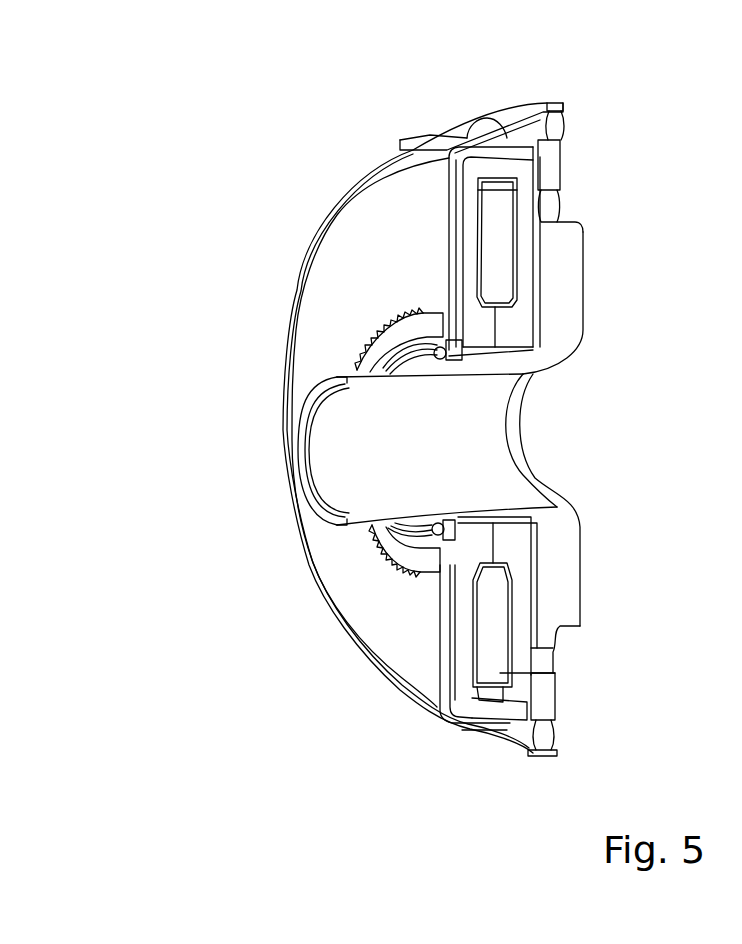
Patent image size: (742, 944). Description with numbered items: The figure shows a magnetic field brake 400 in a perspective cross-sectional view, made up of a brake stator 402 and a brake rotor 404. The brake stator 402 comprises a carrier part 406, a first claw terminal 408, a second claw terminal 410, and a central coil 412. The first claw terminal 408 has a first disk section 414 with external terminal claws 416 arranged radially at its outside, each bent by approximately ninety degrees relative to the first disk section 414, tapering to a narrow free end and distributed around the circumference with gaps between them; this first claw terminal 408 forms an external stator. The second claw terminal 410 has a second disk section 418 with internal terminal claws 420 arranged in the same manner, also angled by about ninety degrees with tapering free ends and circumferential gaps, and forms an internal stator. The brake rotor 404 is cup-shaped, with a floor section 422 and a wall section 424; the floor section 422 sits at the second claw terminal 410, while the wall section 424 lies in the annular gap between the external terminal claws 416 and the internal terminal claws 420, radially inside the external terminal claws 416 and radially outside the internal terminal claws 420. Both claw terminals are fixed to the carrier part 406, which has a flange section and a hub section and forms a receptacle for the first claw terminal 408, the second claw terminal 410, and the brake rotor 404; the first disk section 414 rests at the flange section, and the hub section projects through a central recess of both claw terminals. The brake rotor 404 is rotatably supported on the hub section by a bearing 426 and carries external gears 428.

The magnetic field brake 400 is at (250, 363).
The brake stator 402 is at (568, 646).
The brake rotor 404 is at (388, 203).
The carrier part 406 is at (567, 282).
The first claw terminal 408 is at (513, 539).
The second claw terminal 410 is at (482, 327).
The central coil 412 is at (500, 235).
The first disk section 414 is at (520, 593).
The external terminal claws 416 is at (450, 137).
The second disk section 418 is at (462, 657).
The internal terminal claws 420 is at (477, 712).
The floor section 422 is at (340, 270).
The wall section 424 is at (548, 104).
The bearing 426 is at (452, 522).
The external gears 428 is at (383, 542).